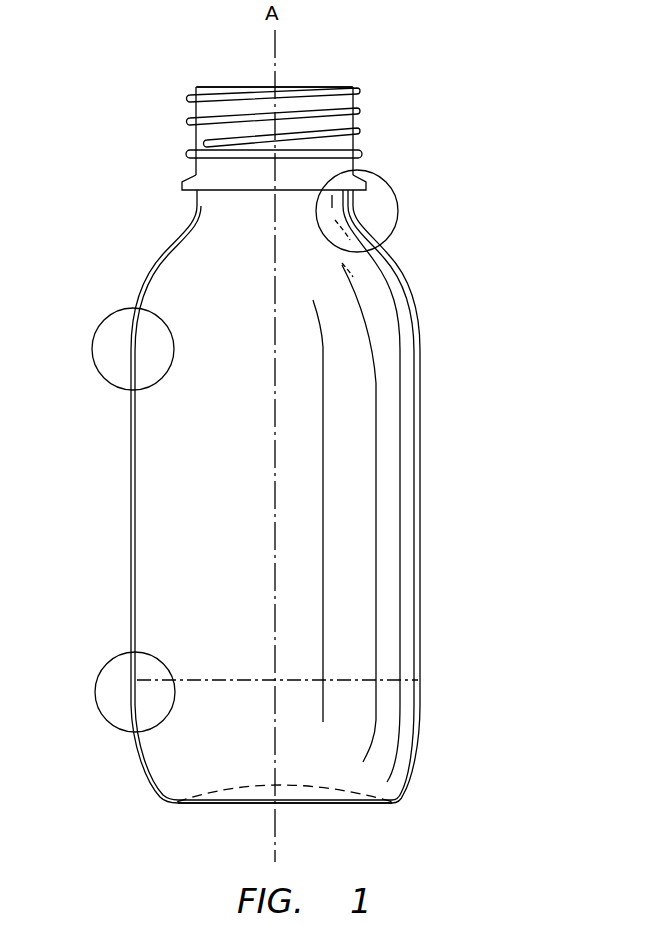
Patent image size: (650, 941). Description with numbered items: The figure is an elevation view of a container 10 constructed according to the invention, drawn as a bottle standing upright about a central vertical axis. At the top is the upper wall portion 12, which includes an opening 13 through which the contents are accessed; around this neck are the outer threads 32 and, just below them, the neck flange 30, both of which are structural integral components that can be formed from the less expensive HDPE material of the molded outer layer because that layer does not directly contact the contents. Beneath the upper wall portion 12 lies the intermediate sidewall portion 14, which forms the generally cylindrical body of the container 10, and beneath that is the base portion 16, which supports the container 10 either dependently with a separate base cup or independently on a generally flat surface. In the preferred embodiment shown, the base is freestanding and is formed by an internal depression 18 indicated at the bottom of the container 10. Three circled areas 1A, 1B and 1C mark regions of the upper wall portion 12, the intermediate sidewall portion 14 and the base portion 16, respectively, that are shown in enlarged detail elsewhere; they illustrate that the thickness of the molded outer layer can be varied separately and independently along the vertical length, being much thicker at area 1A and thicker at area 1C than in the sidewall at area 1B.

The container 10 is at (503, 465).
The upper wall portion 12 is at (170, 136).
The opening 13 is at (283, 80).
The intermediate sidewall portion 14 is at (421, 500).
The base portion 16 is at (421, 687).
The internal depression 18 is at (313, 790).
The neck flange 30 is at (184, 188).
The outer threads 32 is at (357, 110).
The area 1A is at (388, 178).
The area 1B is at (92, 347).
The area 1C is at (93, 692).